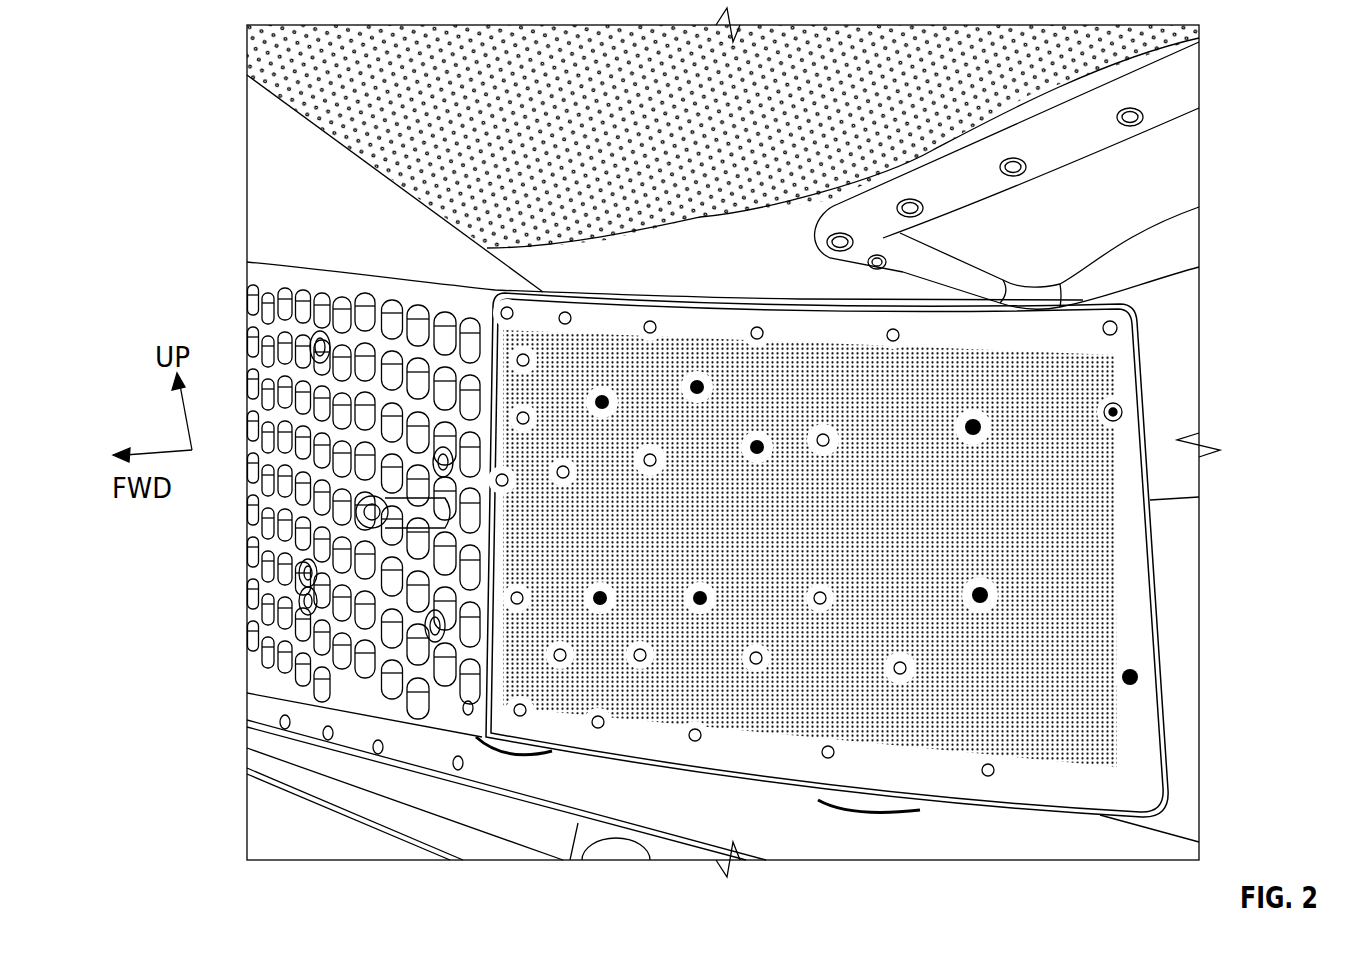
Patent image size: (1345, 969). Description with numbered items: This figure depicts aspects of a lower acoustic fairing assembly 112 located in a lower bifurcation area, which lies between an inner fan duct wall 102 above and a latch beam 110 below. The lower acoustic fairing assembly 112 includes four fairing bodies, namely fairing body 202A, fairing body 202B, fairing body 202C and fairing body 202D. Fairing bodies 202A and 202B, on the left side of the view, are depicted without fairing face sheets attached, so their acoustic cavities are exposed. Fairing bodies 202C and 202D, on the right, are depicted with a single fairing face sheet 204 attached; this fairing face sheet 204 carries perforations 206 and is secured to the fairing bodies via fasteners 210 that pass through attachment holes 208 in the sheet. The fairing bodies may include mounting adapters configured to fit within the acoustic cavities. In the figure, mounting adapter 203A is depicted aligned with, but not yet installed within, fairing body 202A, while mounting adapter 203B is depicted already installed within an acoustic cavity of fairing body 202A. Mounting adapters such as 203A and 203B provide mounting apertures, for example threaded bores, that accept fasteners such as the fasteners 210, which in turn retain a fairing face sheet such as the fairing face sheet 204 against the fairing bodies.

The inner fan duct wall 102 is at (452, 143).
The latch beam 110 is at (325, 845).
The lower acoustic fairing assembly 112 is at (1215, 243).
The fairing body 202A is at (378, 300).
The fairing body 202B is at (263, 653).
The fairing body 202C is at (1180, 477).
The fairing body 202D is at (1178, 675).
The mounting adapter 203A is at (360, 520).
The mounting adapter 203B is at (430, 462).
The fairing face sheet 204 is at (1148, 750).
The perforations 206 is at (1075, 545).
The attachment holes 208 is at (1118, 325).
The fasteners 210 is at (1123, 413).